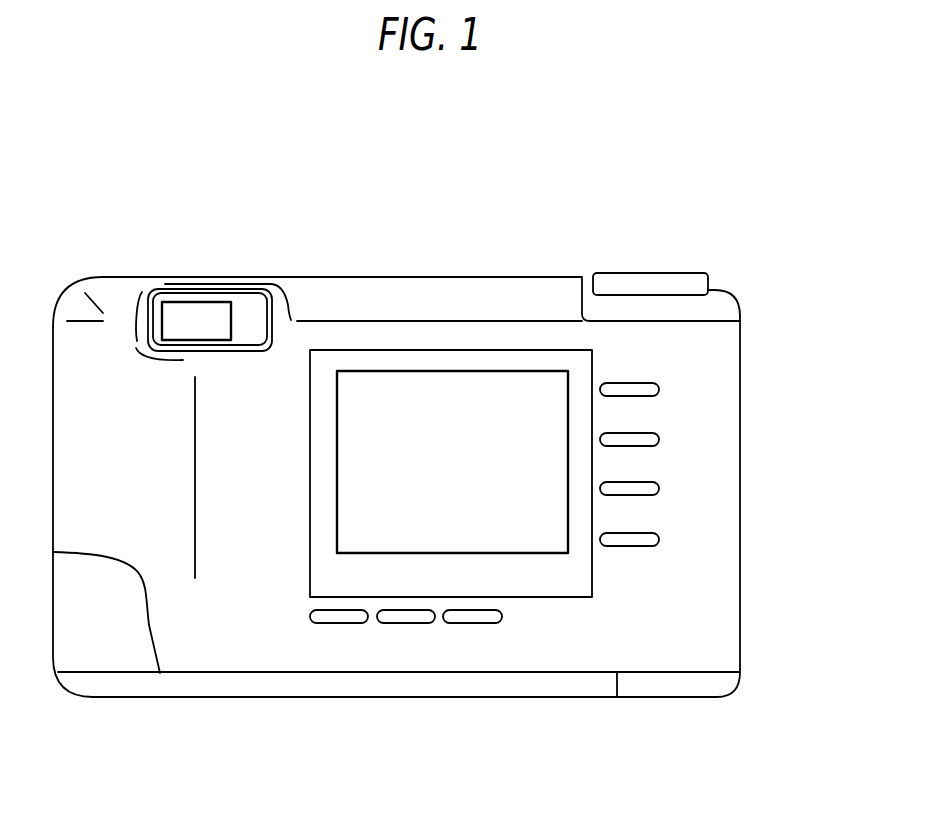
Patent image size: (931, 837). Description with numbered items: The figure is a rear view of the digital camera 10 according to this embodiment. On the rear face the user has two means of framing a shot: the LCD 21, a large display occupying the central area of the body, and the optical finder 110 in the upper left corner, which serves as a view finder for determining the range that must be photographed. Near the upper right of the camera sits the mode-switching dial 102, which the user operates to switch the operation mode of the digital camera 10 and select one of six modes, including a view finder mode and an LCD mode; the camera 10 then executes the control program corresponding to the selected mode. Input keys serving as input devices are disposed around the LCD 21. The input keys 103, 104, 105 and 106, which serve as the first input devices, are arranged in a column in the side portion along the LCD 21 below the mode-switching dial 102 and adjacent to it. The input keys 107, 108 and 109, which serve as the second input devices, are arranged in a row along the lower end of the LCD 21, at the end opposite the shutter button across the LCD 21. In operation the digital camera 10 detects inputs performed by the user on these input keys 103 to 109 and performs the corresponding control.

The digital camera 10 is at (430, 241).
The LCD 21 is at (548, 553).
The mode-switching dial 102 is at (646, 272).
The input key 103 is at (658, 387).
The input key 104 is at (658, 437).
The input key 105 is at (658, 486).
The input key 106 is at (658, 537).
The input key 107 is at (337, 623).
The input key 108 is at (403, 623).
The input key 109 is at (470, 623).
The optical finder 110 is at (183, 308).